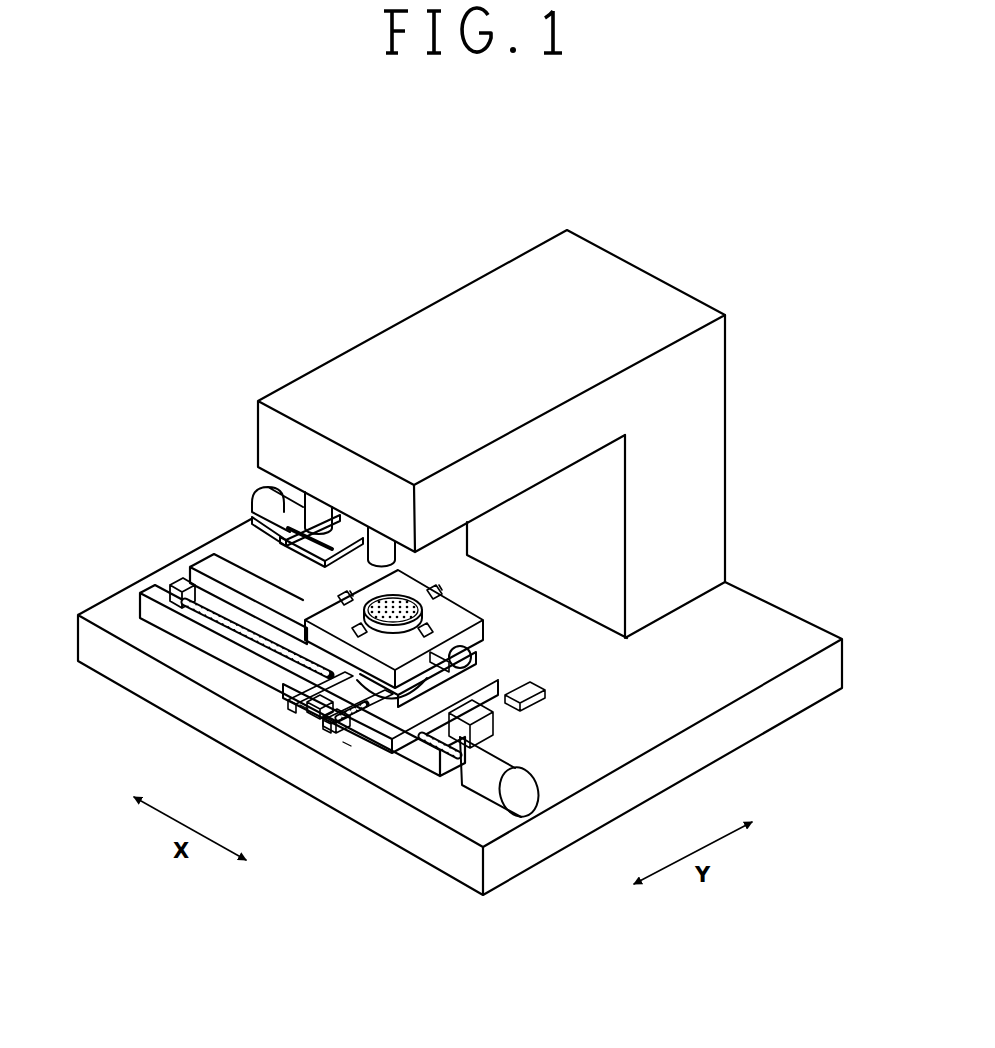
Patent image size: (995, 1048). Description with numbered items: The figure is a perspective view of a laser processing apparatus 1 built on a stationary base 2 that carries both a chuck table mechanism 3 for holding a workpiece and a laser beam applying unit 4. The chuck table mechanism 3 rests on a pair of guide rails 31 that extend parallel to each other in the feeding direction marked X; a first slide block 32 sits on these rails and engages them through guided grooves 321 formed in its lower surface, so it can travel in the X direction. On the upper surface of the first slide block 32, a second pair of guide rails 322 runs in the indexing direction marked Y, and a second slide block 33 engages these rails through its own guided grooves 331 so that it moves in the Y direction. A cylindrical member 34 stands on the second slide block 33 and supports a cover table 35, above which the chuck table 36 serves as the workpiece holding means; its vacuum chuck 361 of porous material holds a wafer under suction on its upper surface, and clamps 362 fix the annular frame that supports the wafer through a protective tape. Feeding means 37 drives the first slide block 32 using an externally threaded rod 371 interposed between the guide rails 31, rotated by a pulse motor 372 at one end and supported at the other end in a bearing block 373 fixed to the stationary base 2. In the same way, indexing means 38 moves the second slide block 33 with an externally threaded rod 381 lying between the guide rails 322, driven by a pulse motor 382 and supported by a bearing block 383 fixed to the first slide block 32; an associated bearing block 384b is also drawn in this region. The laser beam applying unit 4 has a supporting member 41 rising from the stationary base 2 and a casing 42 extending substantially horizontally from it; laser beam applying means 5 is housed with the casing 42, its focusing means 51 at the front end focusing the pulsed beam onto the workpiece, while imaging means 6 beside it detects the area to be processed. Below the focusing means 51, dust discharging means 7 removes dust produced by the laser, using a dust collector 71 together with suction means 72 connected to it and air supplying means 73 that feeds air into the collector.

The laser processing apparatus 1 is at (718, 245).
The stationary base 2 is at (792, 606).
The chuck table mechanism 3 is at (404, 708).
The guide rails 31 is at (267, 634).
The first slide block 32 is at (378, 790).
The guided grooves 321 is at (470, 712).
The guide rails 322 is at (315, 712).
The second slide block 33 is at (460, 680).
The guided grooves 331 is at (375, 752).
The cylindrical member 34 is at (417, 684).
The cover table 35 is at (460, 610).
The chuck table 36 is at (442, 600).
The vacuum chuck 361 is at (470, 600).
The clamps 362 is at (352, 616).
The feeding means 37 is at (347, 763).
The externally threaded rod 371 is at (235, 632).
The pulse motor 372 is at (528, 793).
The bearing block 373 is at (180, 590).
The indexing means 38 is at (403, 725).
The externally threaded rod 381 is at (290, 704).
The pulse motor 382 is at (485, 655).
The bearing block 383 is at (340, 730).
The bearing block 384b is at (520, 700).
The laser beam applying unit 4 is at (533, 416).
The supporting member 41 is at (730, 460).
The casing 42 is at (460, 287).
The laser beam applying means 5 is at (269, 483).
The focusing means 51 is at (298, 500).
The imaging means 6 is at (376, 530).
The dust discharging means 7 is at (273, 527).
The dust collector 71 is at (300, 550).
The suction means 72 is at (262, 510).
The air supplying means 73 is at (290, 538).